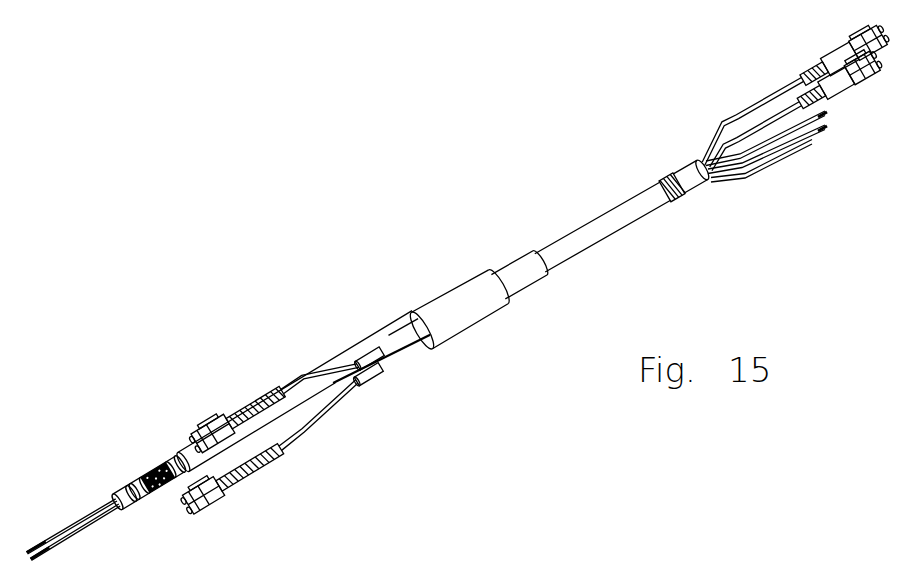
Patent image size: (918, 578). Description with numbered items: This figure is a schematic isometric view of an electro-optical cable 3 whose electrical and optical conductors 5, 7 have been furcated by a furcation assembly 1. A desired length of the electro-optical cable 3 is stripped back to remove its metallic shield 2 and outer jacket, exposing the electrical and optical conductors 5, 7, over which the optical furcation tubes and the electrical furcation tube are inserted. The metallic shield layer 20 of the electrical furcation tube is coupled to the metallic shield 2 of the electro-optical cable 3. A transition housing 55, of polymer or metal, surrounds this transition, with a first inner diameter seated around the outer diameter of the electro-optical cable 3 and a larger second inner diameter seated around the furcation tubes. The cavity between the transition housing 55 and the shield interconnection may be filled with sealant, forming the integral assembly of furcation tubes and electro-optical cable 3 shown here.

The furcation assembly 1 is at (185, 455).
The metallic shield 2 is at (670, 175).
The electro-optical cable 3 is at (605, 223).
The electrical conductors 5 is at (78, 518).
The optical conductors 7 is at (757, 103).
The metallic shield layer 20 is at (142, 480).
The transition housing 55 is at (465, 295).